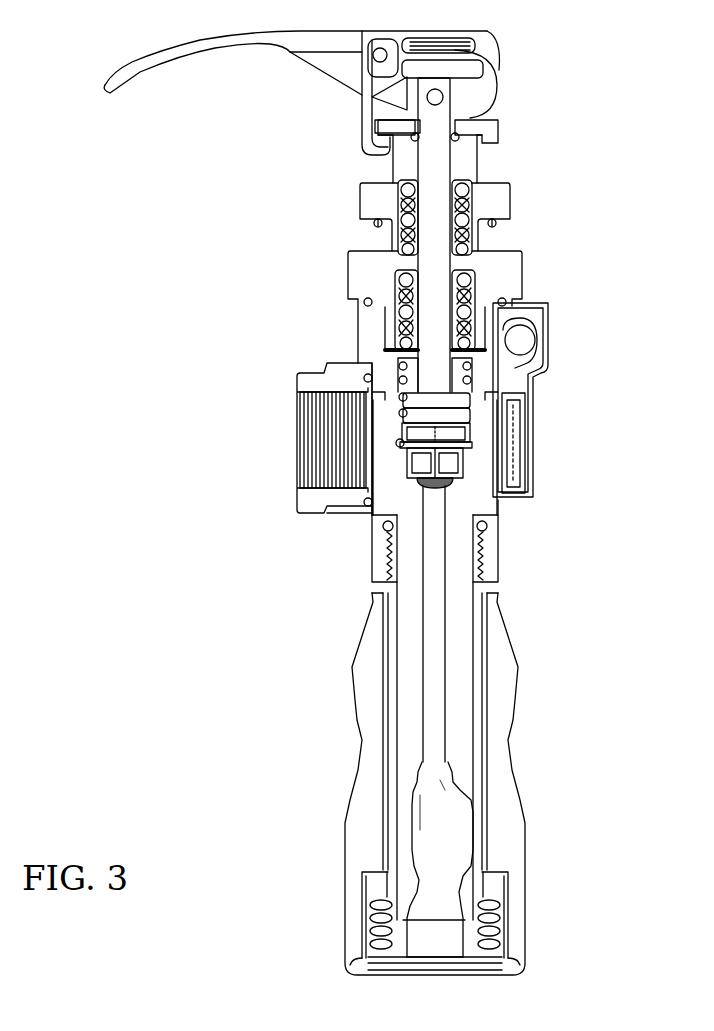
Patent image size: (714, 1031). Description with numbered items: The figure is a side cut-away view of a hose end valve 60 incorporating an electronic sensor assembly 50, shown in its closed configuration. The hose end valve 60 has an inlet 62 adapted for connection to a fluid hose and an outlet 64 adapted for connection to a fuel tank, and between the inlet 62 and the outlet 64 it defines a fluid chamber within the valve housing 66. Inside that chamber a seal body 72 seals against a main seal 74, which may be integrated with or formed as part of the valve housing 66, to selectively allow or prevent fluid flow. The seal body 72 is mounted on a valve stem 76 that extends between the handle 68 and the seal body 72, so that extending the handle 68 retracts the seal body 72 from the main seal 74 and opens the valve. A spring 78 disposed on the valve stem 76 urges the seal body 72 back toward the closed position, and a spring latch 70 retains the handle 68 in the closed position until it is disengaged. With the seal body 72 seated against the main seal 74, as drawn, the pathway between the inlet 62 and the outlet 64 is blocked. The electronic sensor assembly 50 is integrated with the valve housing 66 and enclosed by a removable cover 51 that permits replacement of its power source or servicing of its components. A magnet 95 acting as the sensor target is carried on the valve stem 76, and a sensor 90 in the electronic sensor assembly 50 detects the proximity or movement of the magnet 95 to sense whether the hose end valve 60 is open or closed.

The electronic sensor assembly 50 is at (564, 400).
The removable cover 51 is at (534, 484).
The hose end valve 60 is at (592, 119).
The inlet 62 is at (300, 438).
The outlet 64 is at (370, 975).
The valve housing 66 is at (487, 505).
The handle 68 is at (145, 72).
The spring latch 70 is at (372, 93).
The seal body 72 is at (420, 928).
The main seal 74 is at (465, 932).
The valve stem 76 is at (438, 628).
The spring 78 is at (400, 297).
The sensor 90 is at (528, 395).
The magnet 95 is at (410, 455).